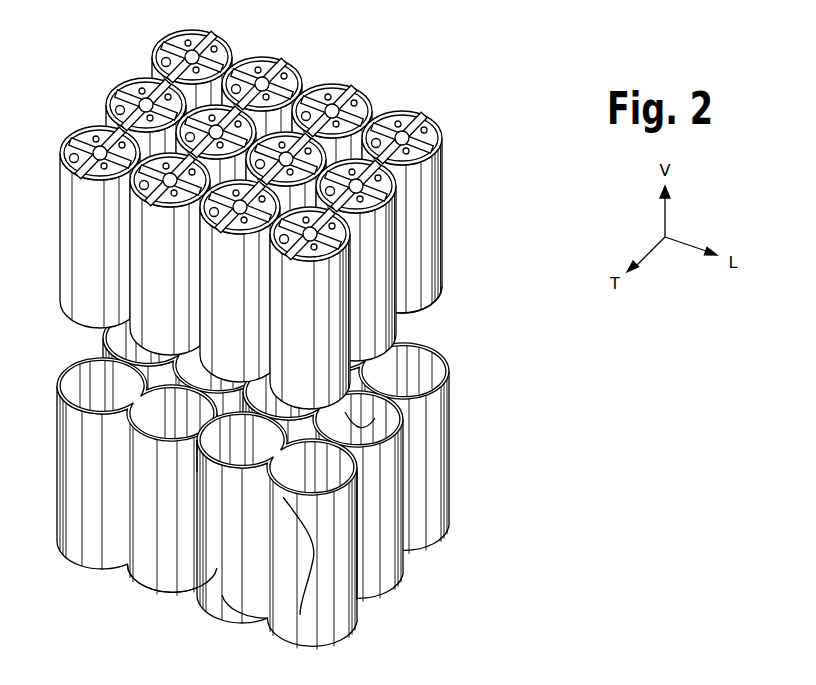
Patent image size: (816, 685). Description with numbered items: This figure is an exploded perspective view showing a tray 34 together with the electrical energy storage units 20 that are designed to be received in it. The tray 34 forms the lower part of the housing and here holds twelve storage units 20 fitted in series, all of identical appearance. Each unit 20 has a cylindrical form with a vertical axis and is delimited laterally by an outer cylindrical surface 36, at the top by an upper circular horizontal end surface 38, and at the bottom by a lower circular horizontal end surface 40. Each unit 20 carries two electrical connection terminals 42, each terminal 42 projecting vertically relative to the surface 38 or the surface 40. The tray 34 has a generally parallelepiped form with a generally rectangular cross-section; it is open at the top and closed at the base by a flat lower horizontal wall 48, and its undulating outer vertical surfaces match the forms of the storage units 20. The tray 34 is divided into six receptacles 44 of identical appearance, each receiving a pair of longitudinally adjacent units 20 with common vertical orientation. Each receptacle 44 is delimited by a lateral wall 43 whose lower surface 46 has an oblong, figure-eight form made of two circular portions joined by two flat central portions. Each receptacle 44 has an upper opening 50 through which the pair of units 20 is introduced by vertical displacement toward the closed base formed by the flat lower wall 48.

The electrical energy storage unit 20 is at (288, 219).
The tray 34 is at (304, 473).
The outer cylindrical surface 36 is at (427, 225).
The upper circular horizontal end surface 38 is at (333, 80).
The lower circular horizontal end surface 40 is at (425, 300).
The electrical connection terminal 42 is at (402, 133).
The lateral wall 43 is at (367, 423).
The receptacle 44 is at (330, 480).
The lower surface 46 is at (300, 615).
The flat lower horizontal wall 48 is at (225, 622).
The upper opening 50 is at (200, 455).